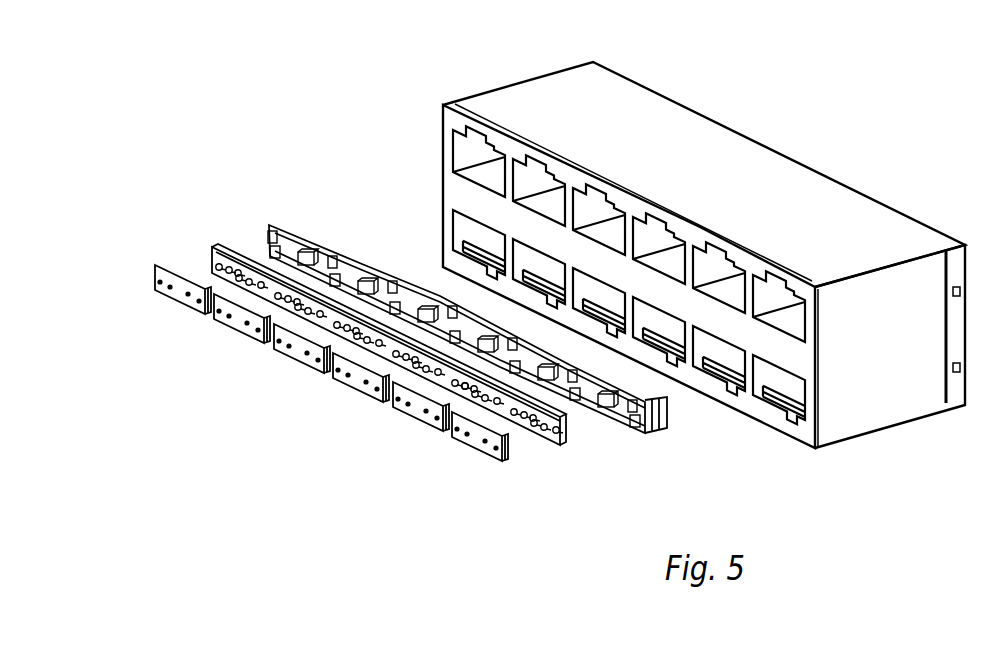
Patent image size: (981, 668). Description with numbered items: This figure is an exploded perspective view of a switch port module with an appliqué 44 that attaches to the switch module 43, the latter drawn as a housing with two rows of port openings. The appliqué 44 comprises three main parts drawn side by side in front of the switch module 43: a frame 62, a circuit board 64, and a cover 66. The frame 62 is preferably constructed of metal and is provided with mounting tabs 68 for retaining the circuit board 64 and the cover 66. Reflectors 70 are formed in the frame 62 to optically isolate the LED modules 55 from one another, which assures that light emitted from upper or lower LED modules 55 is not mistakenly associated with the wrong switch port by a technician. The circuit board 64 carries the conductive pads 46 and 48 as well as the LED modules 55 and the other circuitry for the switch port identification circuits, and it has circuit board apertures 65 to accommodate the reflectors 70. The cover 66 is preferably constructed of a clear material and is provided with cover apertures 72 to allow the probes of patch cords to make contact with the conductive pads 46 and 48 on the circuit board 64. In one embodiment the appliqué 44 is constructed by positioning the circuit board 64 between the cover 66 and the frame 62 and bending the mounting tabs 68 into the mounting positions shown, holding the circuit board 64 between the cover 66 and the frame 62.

The switch module 43 is at (518, 67).
The appliqué 44 is at (182, 133).
The conductive pad 46 is at (455, 381).
The conductive pad 48 is at (462, 391).
The LED module 55 is at (288, 346).
The frame 62 is at (238, 230).
The circuit board 64 is at (186, 244).
The circuit board aperture 65 is at (238, 277).
The cover 66 is at (151, 270).
The mounting tab 68 is at (268, 223).
The reflector 70 is at (299, 259).
The cover aperture 72 is at (346, 378).